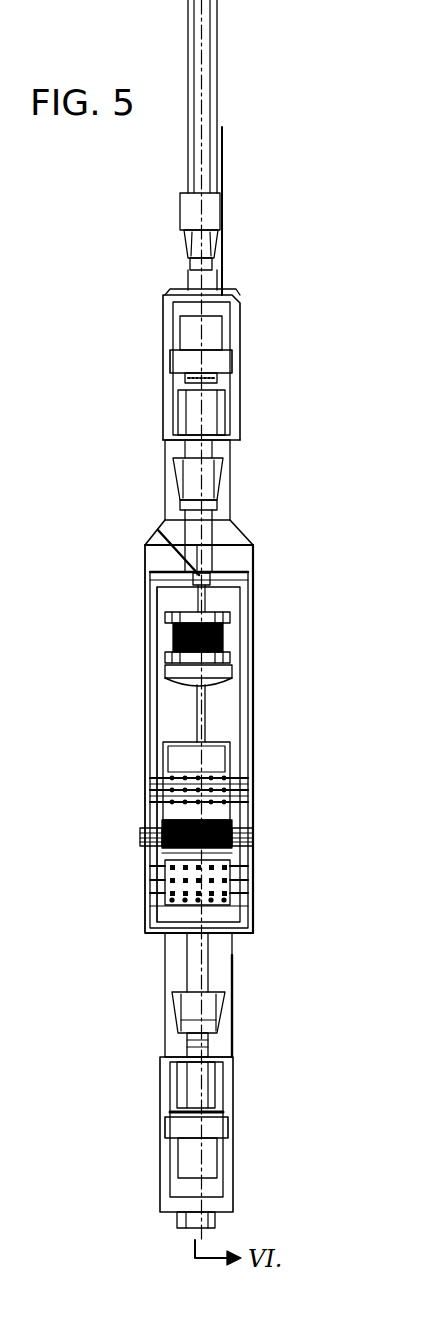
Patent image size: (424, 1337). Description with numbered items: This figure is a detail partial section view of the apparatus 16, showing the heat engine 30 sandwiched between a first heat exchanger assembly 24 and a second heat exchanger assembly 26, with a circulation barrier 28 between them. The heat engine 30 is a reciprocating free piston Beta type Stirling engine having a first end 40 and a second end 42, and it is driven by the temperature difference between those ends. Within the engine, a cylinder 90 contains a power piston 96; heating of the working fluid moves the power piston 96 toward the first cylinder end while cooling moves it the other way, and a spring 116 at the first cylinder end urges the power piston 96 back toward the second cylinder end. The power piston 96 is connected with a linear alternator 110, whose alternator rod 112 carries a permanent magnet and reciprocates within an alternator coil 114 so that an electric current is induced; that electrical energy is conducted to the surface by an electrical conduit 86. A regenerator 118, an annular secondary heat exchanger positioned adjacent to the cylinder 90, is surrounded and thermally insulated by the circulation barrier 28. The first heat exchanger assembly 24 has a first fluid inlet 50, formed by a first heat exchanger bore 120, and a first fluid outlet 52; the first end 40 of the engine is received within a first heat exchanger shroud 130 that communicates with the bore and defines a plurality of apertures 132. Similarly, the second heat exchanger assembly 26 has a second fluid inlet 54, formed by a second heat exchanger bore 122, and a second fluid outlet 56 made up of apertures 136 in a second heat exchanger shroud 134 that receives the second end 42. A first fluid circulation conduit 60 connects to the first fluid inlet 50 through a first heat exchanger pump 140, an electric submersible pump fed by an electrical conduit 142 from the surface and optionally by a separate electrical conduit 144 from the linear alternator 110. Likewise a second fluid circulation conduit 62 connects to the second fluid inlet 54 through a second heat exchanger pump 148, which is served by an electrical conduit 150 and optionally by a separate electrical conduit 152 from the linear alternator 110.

The apparatus 16 is at (297, 361).
The first heat exchanger assembly 24 is at (295, 646).
The second heat exchanger assembly 26 is at (330, 875).
The circulation barrier 28 is at (253, 848).
The heat engine 30 is at (170, 693).
The first end 40 is at (253, 812).
The second end 42 is at (173, 857).
The first fluid inlet 50 is at (175, 572).
The first fluid outlet 52 is at (253, 778).
The second fluid inlet 54 is at (188, 952).
The second fluid outlet 56 is at (253, 883).
The first fluid circulation conduit 60 is at (205, 30).
The second fluid circulation conduit 62 is at (212, 1223).
The electrical conduit 86 is at (173, 492).
The cylinder 90 is at (163, 745).
The power piston 96 is at (225, 762).
The linear alternator 110 is at (224, 638).
The alternator rod 112 is at (197, 718).
The alternator coil 114 is at (172, 640).
The spring 116 is at (228, 682).
The regenerator 118 is at (170, 828).
The first heat exchanger bore 120 is at (197, 551).
The second heat exchanger bore 122 is at (200, 970).
The first heat exchanger shroud 130 is at (253, 730).
The apertures 132 is at (257, 792).
The second heat exchanger shroud 134 is at (150, 902).
The apertures 136 is at (253, 893).
The first heat exchanger pump 140 is at (232, 413).
The electrical conduit 142 is at (214, 314).
The electrical conduit 144 is at (168, 516).
The second heat exchanger pump 148 is at (207, 1100).
The electrical conduit 150 is at (223, 155).
The electrical conduit 152 is at (244, 588).